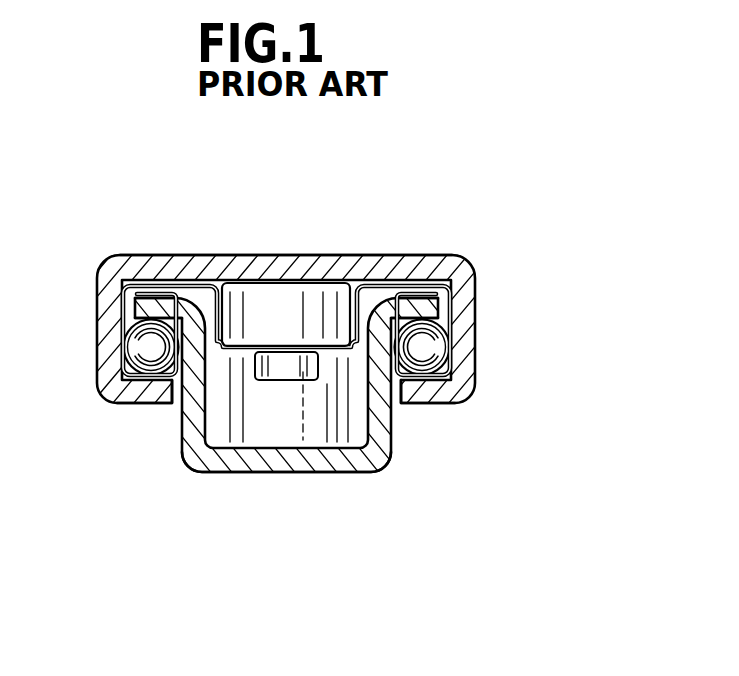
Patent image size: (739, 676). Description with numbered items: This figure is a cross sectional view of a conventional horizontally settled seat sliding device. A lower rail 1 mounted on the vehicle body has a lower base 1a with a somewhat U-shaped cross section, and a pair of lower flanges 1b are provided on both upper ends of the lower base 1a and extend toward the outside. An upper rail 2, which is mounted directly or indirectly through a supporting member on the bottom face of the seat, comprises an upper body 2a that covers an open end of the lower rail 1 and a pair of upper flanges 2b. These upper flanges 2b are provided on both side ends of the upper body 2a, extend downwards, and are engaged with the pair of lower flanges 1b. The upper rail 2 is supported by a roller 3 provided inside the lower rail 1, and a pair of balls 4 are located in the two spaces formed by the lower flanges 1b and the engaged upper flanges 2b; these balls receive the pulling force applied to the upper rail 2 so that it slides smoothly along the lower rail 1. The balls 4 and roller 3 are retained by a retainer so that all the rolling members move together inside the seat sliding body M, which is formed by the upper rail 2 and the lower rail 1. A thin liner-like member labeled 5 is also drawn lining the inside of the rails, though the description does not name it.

The lower rail 1 is at (297, 385).
The lower base 1a is at (378, 470).
The lower flanges 1b is at (170, 318).
The upper rail 2 is at (297, 319).
The upper body 2a is at (204, 256).
The upper flanges 2b is at (145, 404).
The roller 3 is at (328, 433).
The balls 4 is at (140, 353).
The liner 5 is at (206, 282).
The seat sliding body M is at (320, 319).